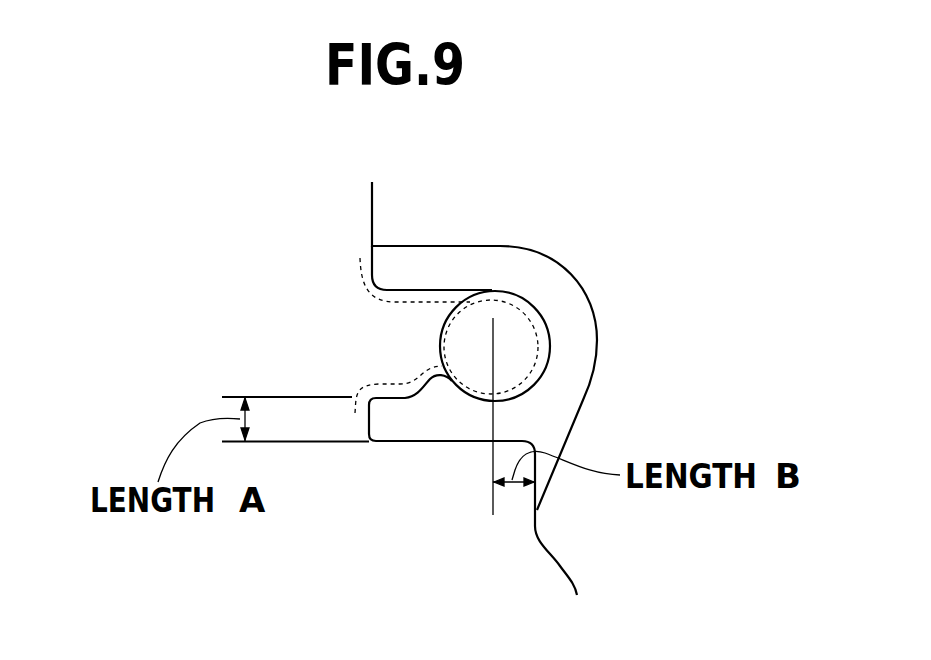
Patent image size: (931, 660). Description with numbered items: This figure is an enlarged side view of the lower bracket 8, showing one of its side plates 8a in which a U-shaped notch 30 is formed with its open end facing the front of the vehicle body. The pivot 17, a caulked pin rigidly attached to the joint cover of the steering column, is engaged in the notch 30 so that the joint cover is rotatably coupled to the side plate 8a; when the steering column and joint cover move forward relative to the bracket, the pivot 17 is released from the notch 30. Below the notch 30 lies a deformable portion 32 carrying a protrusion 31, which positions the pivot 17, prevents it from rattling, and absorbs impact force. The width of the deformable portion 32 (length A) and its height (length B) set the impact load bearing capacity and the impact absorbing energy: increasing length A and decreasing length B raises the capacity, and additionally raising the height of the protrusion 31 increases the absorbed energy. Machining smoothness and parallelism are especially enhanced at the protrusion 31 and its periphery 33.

The lower bracket 8 is at (372, 225).
The side plate 8a is at (572, 528).
The pivot 17 is at (525, 337).
The notch 30 is at (432, 272).
The protrusion 31 is at (428, 378).
The deformable portion 32 is at (382, 442).
The periphery of the protrusion 33 is at (375, 284).